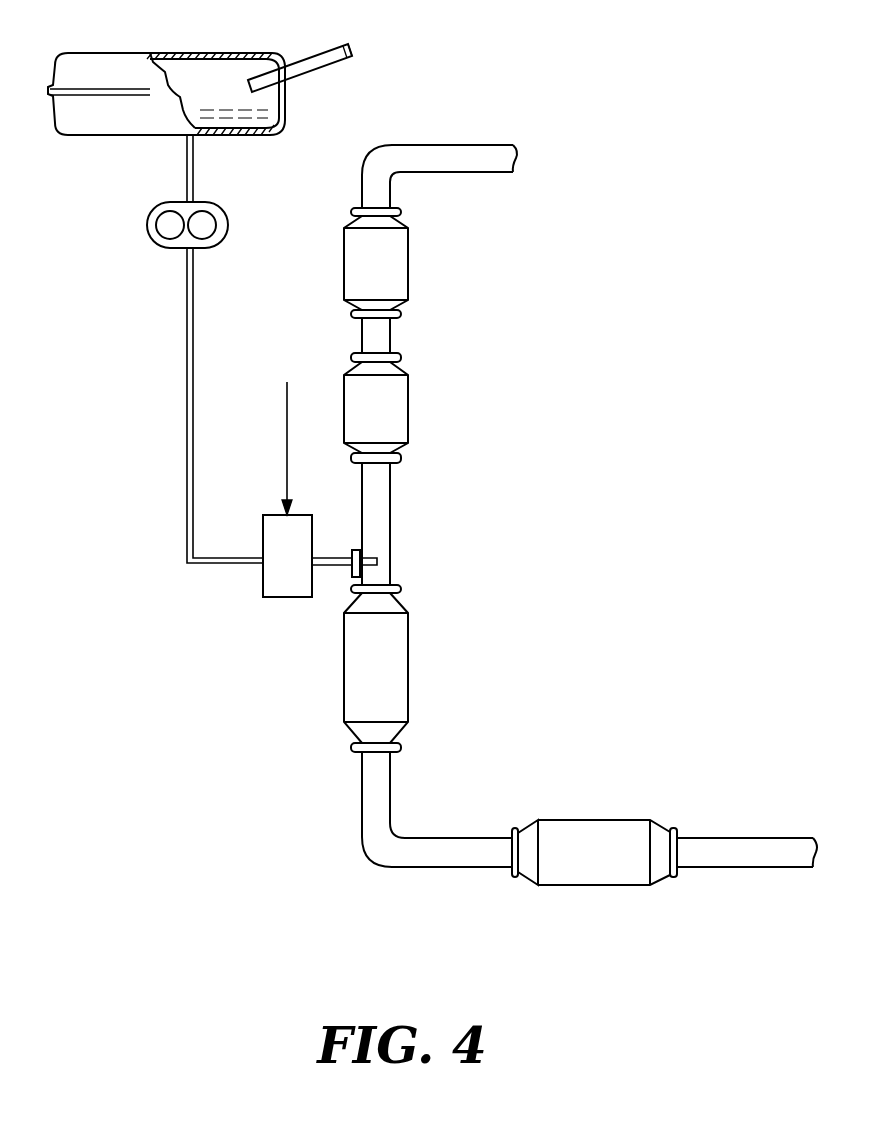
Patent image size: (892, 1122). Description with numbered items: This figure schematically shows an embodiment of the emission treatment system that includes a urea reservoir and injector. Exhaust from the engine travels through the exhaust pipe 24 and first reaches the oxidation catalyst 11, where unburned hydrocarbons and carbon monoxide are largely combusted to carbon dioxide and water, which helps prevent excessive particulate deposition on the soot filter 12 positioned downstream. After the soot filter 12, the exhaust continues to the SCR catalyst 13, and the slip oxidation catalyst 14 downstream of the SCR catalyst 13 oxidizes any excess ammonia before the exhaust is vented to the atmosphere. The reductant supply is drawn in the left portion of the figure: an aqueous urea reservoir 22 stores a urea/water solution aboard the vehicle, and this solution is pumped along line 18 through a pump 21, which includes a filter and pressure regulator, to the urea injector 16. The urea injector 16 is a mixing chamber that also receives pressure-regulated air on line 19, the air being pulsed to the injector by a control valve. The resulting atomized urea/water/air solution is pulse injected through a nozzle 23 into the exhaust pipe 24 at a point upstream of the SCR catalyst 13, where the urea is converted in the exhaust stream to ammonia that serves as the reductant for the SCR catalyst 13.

The oxidation catalyst 11 is at (408, 265).
The soot filter 12 is at (408, 388).
The SCR catalyst 13 is at (408, 638).
The slip oxidation catalyst 14 is at (600, 820).
The urea injector 16 is at (263, 583).
The line 18 is at (188, 515).
The line 19 is at (287, 405).
The pump 21 is at (220, 206).
The aqueous urea reservoir 22 is at (185, 53).
The nozzle 23 is at (352, 553).
The exhaust pipe 24 is at (391, 521).